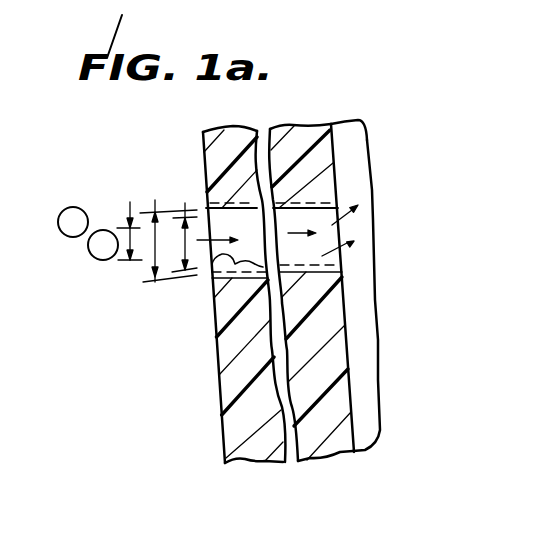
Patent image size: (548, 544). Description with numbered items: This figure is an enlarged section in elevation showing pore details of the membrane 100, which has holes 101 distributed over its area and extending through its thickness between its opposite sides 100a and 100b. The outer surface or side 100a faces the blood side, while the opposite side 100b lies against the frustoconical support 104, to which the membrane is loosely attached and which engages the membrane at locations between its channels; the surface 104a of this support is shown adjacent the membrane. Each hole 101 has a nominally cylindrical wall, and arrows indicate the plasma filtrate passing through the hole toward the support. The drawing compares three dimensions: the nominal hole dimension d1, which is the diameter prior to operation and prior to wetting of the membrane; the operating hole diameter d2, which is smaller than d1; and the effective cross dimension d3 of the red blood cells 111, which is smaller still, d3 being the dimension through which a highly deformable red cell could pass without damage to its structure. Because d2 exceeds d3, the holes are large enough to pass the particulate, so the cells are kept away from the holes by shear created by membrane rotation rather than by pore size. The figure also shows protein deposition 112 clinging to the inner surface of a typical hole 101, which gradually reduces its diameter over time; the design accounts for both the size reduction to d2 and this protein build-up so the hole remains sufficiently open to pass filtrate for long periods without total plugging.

The membrane 100 is at (352, 418).
The outer surface or side of membrane 100a is at (218, 378).
The opposite side of membrane 100b is at (348, 338).
The holes 101 is at (311, 249).
The frustoconical support 104 is at (388, 185).
The outer surface of coating layer 104a is at (350, 147).
The red blood cells 111 is at (72, 225).
The protein deposition 112 is at (210, 262).
The hole nominal dimension d1 is at (168, 224).
The hole diameter d2 is at (184, 219).
The effective cross dimension of red blood cells d3 is at (127, 213).